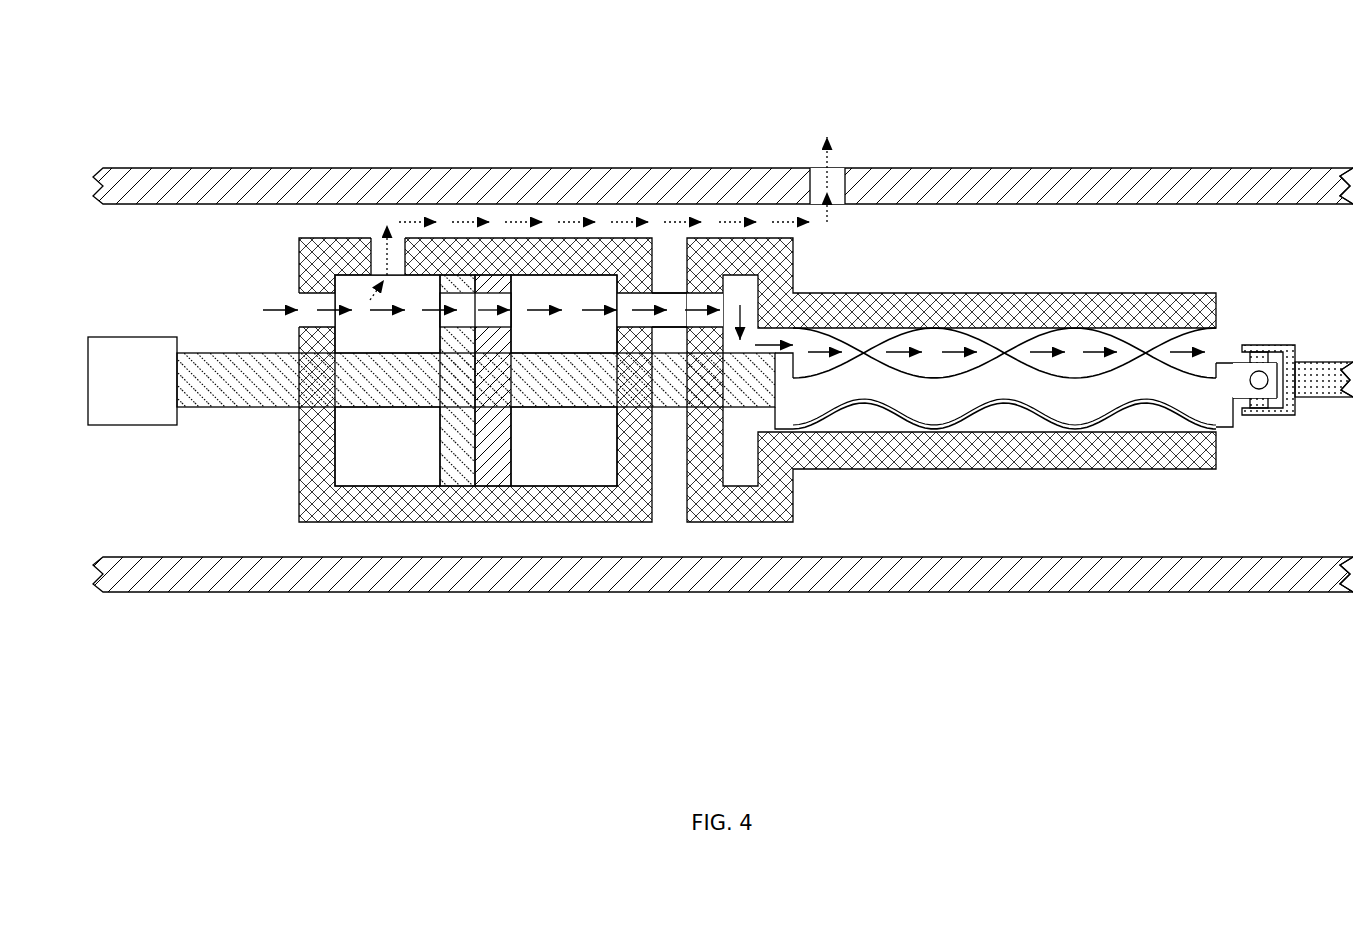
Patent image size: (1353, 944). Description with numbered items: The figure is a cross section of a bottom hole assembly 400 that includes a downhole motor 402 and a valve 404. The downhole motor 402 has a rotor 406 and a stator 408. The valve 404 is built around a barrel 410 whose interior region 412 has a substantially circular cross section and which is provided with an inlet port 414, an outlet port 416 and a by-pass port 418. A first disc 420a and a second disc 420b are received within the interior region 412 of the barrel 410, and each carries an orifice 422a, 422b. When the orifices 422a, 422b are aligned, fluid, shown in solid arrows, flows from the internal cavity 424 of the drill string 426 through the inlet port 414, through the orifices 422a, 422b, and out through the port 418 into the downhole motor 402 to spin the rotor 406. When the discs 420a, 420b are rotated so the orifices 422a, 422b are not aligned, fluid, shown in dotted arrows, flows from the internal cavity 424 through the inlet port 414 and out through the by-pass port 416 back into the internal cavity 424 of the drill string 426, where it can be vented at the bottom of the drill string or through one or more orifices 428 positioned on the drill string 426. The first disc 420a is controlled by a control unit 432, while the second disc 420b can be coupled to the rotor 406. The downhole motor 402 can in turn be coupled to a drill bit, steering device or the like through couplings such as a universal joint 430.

The bottom hole assembly 400 is at (1118, 128).
The downhole motor 402 is at (1216, 697).
The valve 404 is at (298, 697).
The rotor 406 is at (919, 408).
The stator 408 is at (1005, 418).
The barrel 410 is at (563, 238).
The interior region 412 is at (570, 479).
The inlet port 414 is at (298, 295).
The outlet port 416 is at (368, 237).
The by-pass port 418 is at (653, 290).
The first disc 420a is at (440, 450).
The second disc 420b is at (511, 450).
The orifice 422a is at (440, 317).
The orifice 422b is at (511, 317).
The internal cavity 424 is at (105, 269).
The drill string 426 is at (191, 167).
The orifices 428 is at (810, 167).
The universal joint 430 is at (1295, 422).
The control unit 432 is at (114, 399).